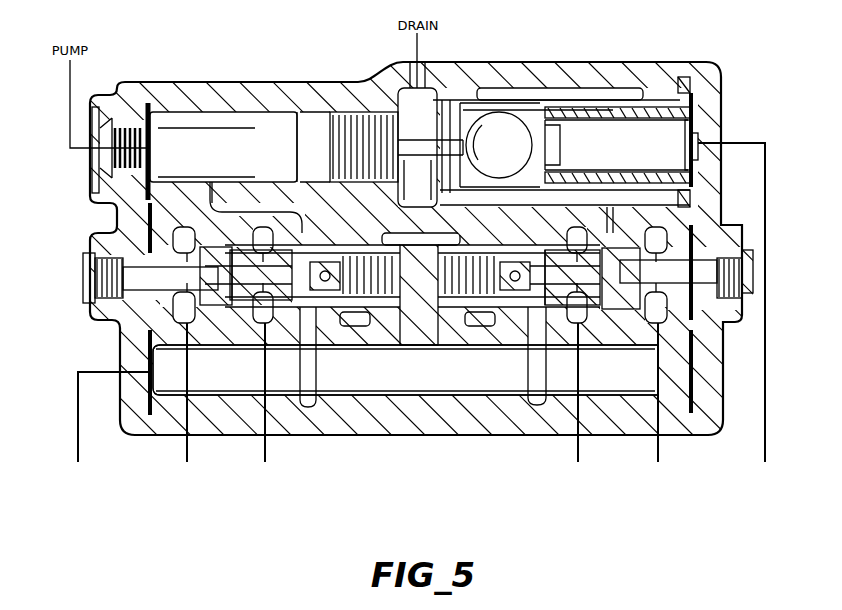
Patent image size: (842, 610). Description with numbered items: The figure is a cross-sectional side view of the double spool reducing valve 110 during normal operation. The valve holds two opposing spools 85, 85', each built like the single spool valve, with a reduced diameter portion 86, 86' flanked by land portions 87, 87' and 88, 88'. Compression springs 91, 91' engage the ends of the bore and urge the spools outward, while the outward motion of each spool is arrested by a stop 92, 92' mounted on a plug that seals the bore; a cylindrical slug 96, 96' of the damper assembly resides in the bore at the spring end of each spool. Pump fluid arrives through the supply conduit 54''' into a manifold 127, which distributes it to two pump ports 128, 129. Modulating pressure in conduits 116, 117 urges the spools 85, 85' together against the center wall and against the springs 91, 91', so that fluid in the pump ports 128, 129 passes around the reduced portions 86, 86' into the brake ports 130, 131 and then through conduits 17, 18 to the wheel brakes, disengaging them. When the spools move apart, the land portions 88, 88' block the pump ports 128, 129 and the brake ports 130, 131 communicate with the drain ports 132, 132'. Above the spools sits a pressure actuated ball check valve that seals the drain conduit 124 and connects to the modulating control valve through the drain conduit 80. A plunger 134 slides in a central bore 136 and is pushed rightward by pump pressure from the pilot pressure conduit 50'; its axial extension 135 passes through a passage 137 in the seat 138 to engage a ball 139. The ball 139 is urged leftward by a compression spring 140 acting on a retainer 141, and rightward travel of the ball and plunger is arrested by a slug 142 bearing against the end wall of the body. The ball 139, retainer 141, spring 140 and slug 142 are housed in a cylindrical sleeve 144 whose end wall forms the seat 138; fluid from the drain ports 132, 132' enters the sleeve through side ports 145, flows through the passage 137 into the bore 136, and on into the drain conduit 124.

The double spool reducing valve 110 is at (421, 296).
The pilot pressure conduit 50' is at (100, 150).
The supply conduit 54''' is at (99, 430).
The drain conduit 80 is at (741, 144).
The spool 85 is at (574, 222).
The spool 85' is at (248, 219).
The reduced diameter portion 86 is at (566, 312).
The reduced diameter portion 86' is at (280, 312).
The land portion 87 is at (645, 309).
The land portion 87' is at (200, 310).
The land portion 88 is at (495, 317).
The land portion 88' is at (347, 317).
The compression spring 91 is at (478, 276).
The compression spring 91' is at (357, 276).
The stop 92 is at (677, 278).
The stop 92' is at (157, 276).
The cylindrical slug 96 is at (461, 317).
The cylindrical slug 96' is at (380, 317).
The modulating conduit 116 is at (189, 452).
The modulating conduit 117 is at (656, 452).
The conduit 17 is at (267, 452).
The conduit 18 is at (578, 452).
The drain conduit 124 is at (421, 41).
The manifold 127 is at (424, 383).
The pump port 128 is at (540, 330).
The pump port 129 is at (307, 338).
The brake port 130 is at (585, 330).
The brake port 131 is at (255, 292).
The drain port 132 is at (566, 176).
The drain port 132' is at (270, 172).
The plunger 134 is at (313, 135).
The axial extension 135 is at (418, 132).
The central bore 136 is at (225, 112).
The passage 137 is at (440, 180).
The seat 138 is at (467, 183).
The ball 139 is at (530, 142).
The compression spring 140 is at (612, 108).
The retainer 141 is at (536, 166).
The slug 142 is at (648, 103).
The cylindrical sleeve 144 is at (577, 100).
The ports 145 is at (487, 105).